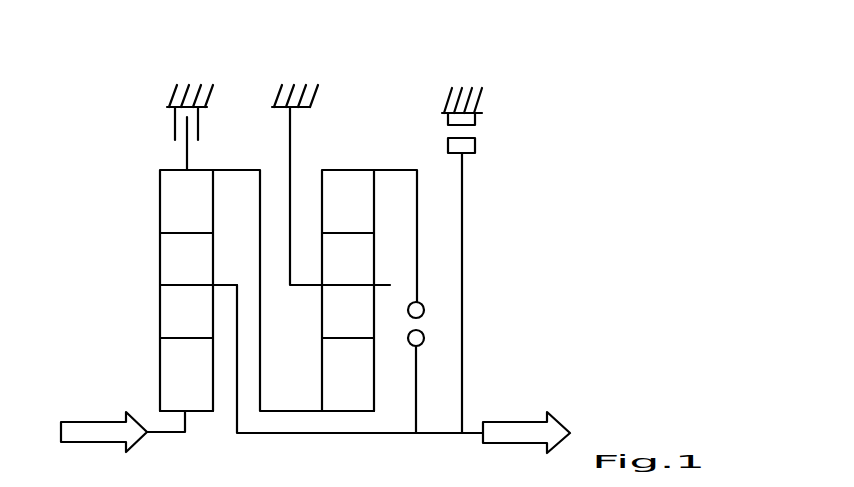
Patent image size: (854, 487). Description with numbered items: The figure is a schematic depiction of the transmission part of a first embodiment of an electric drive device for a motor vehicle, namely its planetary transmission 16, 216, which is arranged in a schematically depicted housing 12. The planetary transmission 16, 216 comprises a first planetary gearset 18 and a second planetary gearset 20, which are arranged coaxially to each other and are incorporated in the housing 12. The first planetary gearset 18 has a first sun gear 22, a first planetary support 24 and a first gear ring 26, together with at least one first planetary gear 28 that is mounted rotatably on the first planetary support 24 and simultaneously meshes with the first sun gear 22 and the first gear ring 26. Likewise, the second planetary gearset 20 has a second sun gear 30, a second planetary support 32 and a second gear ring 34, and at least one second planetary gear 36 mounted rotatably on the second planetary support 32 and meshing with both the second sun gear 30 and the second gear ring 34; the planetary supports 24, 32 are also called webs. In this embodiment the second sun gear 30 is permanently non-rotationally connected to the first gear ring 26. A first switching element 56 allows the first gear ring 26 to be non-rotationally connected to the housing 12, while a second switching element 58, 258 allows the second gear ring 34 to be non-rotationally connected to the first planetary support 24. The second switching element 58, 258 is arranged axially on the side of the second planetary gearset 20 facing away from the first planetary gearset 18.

The housing 12 is at (183, 100).
The planetary transmission 16 is at (343, 112).
The planetary transmission 216 is at (315, 236).
The first planetary gearset 18 is at (153, 157).
The second planetary gearset 20 is at (347, 160).
The first sun gear 22 is at (178, 400).
The first planetary support 24 is at (178, 287).
The first gear ring 26 is at (178, 215).
The first planetary gear 28 is at (178, 325).
The second sun gear 30 is at (358, 400).
The second planetary support 32 is at (360, 285).
The second gear ring 34 is at (358, 217).
The second planetary gear 36 is at (358, 327).
The first switching element 56 is at (202, 118).
The second switching element 58 is at (435, 323).
The second switching element 258 is at (416, 367).